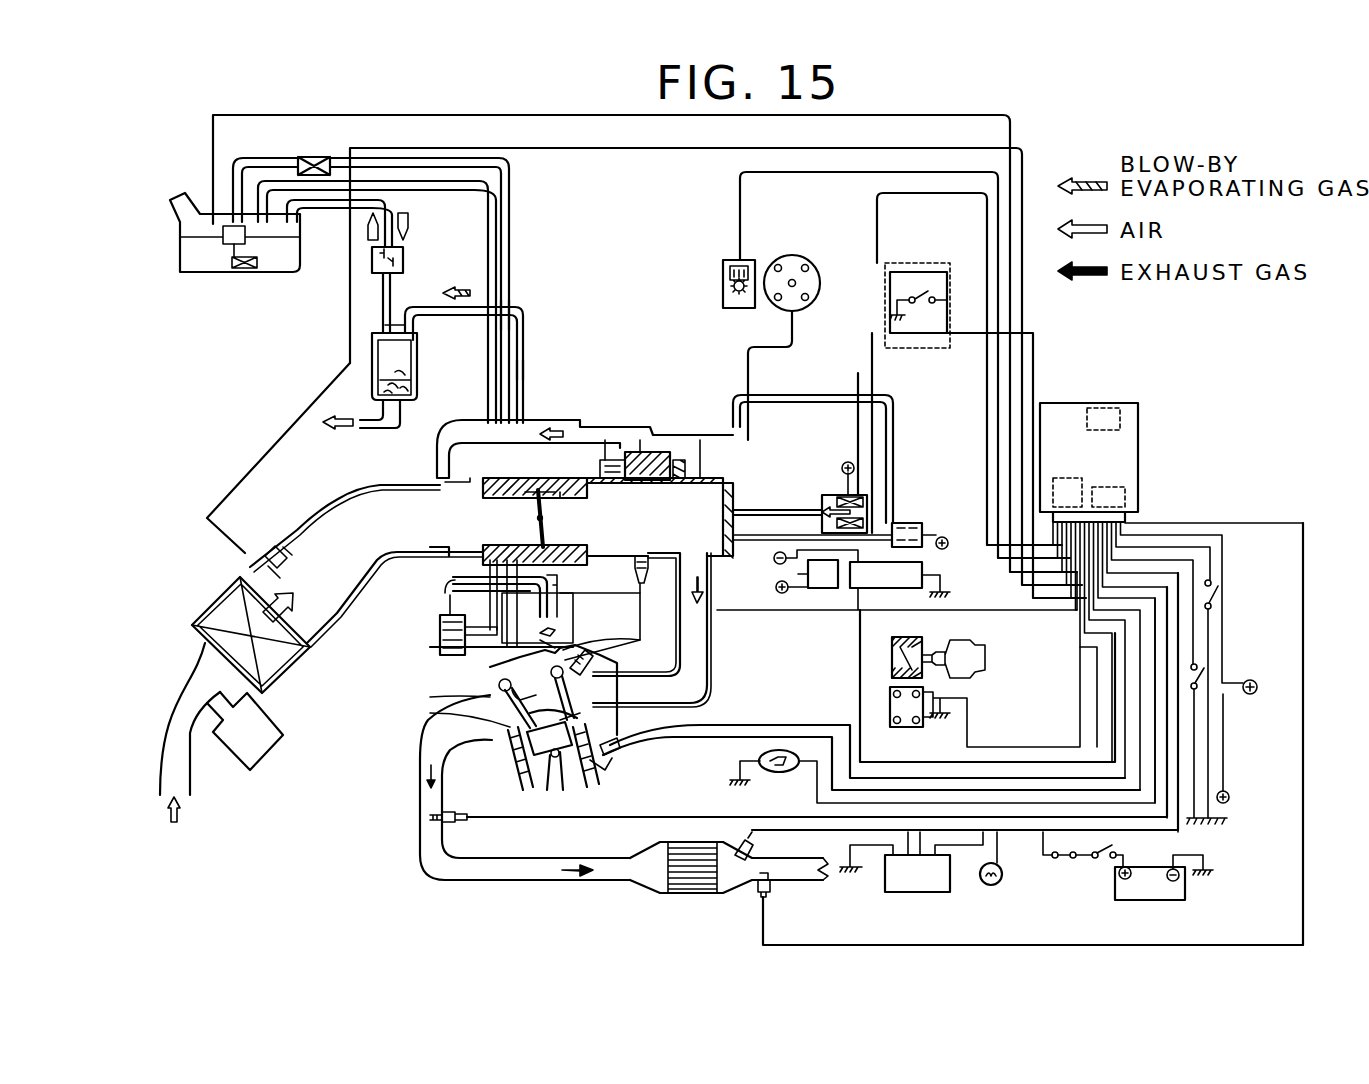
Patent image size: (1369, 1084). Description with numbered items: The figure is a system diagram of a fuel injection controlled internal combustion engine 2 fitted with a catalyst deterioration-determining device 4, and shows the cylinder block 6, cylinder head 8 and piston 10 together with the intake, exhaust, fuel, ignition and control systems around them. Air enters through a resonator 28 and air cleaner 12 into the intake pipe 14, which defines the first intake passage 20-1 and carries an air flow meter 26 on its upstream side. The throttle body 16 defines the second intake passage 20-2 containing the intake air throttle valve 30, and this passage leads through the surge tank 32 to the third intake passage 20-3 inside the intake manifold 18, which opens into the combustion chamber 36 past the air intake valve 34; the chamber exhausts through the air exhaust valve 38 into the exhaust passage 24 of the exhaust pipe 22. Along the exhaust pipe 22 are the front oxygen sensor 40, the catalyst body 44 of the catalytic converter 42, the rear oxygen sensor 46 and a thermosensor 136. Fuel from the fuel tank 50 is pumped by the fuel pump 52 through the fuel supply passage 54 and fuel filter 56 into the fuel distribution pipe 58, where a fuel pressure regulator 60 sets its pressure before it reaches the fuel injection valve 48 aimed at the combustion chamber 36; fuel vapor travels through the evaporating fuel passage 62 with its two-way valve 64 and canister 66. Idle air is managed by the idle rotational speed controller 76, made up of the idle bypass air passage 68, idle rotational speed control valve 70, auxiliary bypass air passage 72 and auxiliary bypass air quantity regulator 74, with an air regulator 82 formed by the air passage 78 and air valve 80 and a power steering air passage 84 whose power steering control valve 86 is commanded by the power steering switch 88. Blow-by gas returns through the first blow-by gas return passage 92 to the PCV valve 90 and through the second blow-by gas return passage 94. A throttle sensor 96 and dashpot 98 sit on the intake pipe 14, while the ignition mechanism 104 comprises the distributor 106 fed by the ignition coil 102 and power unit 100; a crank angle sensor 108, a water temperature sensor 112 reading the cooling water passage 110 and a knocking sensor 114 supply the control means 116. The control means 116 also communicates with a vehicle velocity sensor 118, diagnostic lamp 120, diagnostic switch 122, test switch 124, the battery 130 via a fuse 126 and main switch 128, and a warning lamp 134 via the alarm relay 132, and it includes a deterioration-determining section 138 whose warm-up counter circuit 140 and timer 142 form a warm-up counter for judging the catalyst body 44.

The internal combustion engine 2 is at (756, 748).
The catalyst deterioration-determining device 4 is at (1137, 427).
The cylinder block 6 is at (530, 775).
The cylinder head 8 is at (463, 712).
The piston 10 is at (573, 783).
The air cleaner 12 is at (205, 600).
The intake pipe 14 is at (592, 575).
The throttle body 16 is at (556, 569).
The intake manifold 18 is at (702, 630).
The first intake passage 20-1 is at (333, 528).
The second intake passage 20-2 is at (668, 516).
The third intake passage 20-3 is at (693, 687).
The exhaust pipe 22 is at (496, 810).
The exhaust passage 24 is at (487, 873).
The air flow meter 26 is at (229, 570).
The resonator 28 is at (273, 750).
The intake air throttle valve 30 is at (544, 513).
The surge tank 32 is at (720, 480).
The air intake valve 34 is at (487, 665).
The combustion chamber 36 is at (510, 755).
The air exhaust valve 38 is at (465, 717).
The front oxygen sensor 40 is at (457, 822).
The catalytic converter 42 is at (710, 892).
The catalyst body 44 is at (697, 883).
The rear oxygen sensor 46 is at (770, 892).
The fuel injection valve 48 is at (563, 650).
The fuel tank 50 is at (170, 264).
The fuel pump 52 is at (230, 240).
The fuel supply passage 54 is at (510, 237).
The fuel filter 56 is at (308, 155).
The fuel distribution pipe 58 is at (477, 653).
The fuel pressure regulator 60 is at (440, 632).
The evaporating fuel passage 62 is at (525, 325).
The two-way valve 64 is at (403, 262).
The canister 66 is at (417, 358).
The idle bypass air passage 68 is at (668, 425).
The idle rotational speed control valve 70 is at (822, 500).
The auxiliary bypass air passage 72 is at (537, 493).
The auxiliary bypass air quantity regulator 74 is at (446, 460).
The idle rotational speed controller 76 is at (571, 408).
The air passage 78 is at (605, 425).
The air valve 80 is at (640, 425).
The air regulator 82 is at (705, 425).
The power steering air passage 84 is at (885, 395).
The power steering control valve 86 is at (908, 522).
The power steering switch 88 is at (930, 275).
The PCV valve 90 is at (671, 574).
The first blow-by gas return passage 92 is at (648, 628).
The second blow-by gas return passage 94 is at (453, 585).
The throttle sensor 96 is at (905, 727).
The dashpot 98 is at (985, 645).
The power unit 100 is at (897, 601).
The ignition coil 102 is at (820, 590).
The ignition mechanism 104 is at (762, 251).
The distributor 106 is at (805, 262).
The crank angle sensor 108 is at (722, 272).
The cooling water passage 110 is at (603, 777).
The water temperature sensor 112 is at (598, 763).
The knocking sensor 114 is at (617, 740).
The control means 116 is at (1068, 405).
The vehicle velocity sensor 118 is at (785, 773).
The diagnostic lamp 120 is at (1253, 695).
The diagnostic switch 122 is at (1220, 598).
The test switch 124 is at (1203, 677).
The fuse 126 is at (1060, 858).
The main switch 128 is at (1107, 860).
The battery 130 is at (1168, 893).
The alarm relay 132 is at (905, 893).
The warning lamp 134 is at (990, 885).
The thermosensor 136 is at (745, 858).
The deterioration-determining section 138 is at (1082, 485).
The warm-up counter circuit 140 is at (1125, 497).
The timer 142 is at (1120, 420).